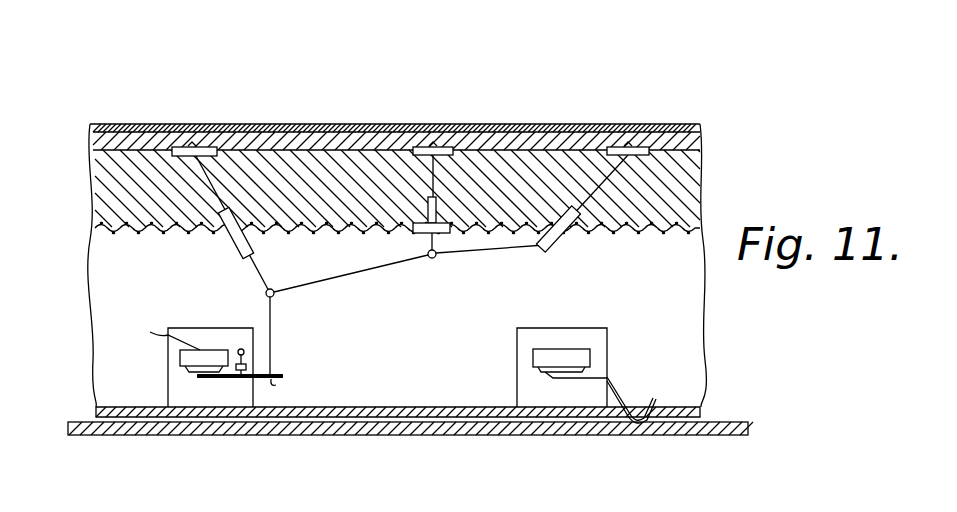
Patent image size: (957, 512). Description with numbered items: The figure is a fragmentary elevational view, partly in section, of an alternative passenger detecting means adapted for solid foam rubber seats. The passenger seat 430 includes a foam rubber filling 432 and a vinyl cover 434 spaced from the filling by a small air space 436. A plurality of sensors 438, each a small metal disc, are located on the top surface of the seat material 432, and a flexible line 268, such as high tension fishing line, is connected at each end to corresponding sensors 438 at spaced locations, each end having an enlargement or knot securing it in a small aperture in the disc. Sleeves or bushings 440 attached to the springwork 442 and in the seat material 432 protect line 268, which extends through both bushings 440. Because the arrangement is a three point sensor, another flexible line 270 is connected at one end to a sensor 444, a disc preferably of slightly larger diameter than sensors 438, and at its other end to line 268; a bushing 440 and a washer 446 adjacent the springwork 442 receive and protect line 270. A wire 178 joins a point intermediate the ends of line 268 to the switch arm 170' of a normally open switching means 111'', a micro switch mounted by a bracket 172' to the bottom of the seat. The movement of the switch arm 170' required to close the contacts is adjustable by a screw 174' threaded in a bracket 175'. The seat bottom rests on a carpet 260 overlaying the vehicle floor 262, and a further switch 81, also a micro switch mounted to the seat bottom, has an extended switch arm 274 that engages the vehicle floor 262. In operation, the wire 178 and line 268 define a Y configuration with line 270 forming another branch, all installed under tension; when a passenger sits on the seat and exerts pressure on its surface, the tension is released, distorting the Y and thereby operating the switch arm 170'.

The passenger seat 430 is at (712, 101).
The foam rubber filling 432 is at (317, 173).
The vinyl cover 434 is at (403, 123).
The air space 436 is at (568, 140).
The sensors 438 is at (192, 147).
The sleeves or bushings 440 is at (225, 240).
The springwork 442 is at (661, 234).
The sensor 444 is at (436, 146).
The washer 446 is at (452, 236).
The flexible line 268 is at (213, 190).
The flexible line 270 is at (486, 238).
The wire 178 is at (273, 323).
The switch arm 170' is at (283, 369).
The bracket 172' is at (146, 367).
The screw 174' is at (208, 330).
The bracket 175' is at (282, 354).
The switching means 111'' is at (155, 330).
The switch 81 is at (567, 355).
The switch arm 274 is at (628, 395).
The carpet 260 is at (700, 420).
The vehicle floor 262 is at (733, 435).